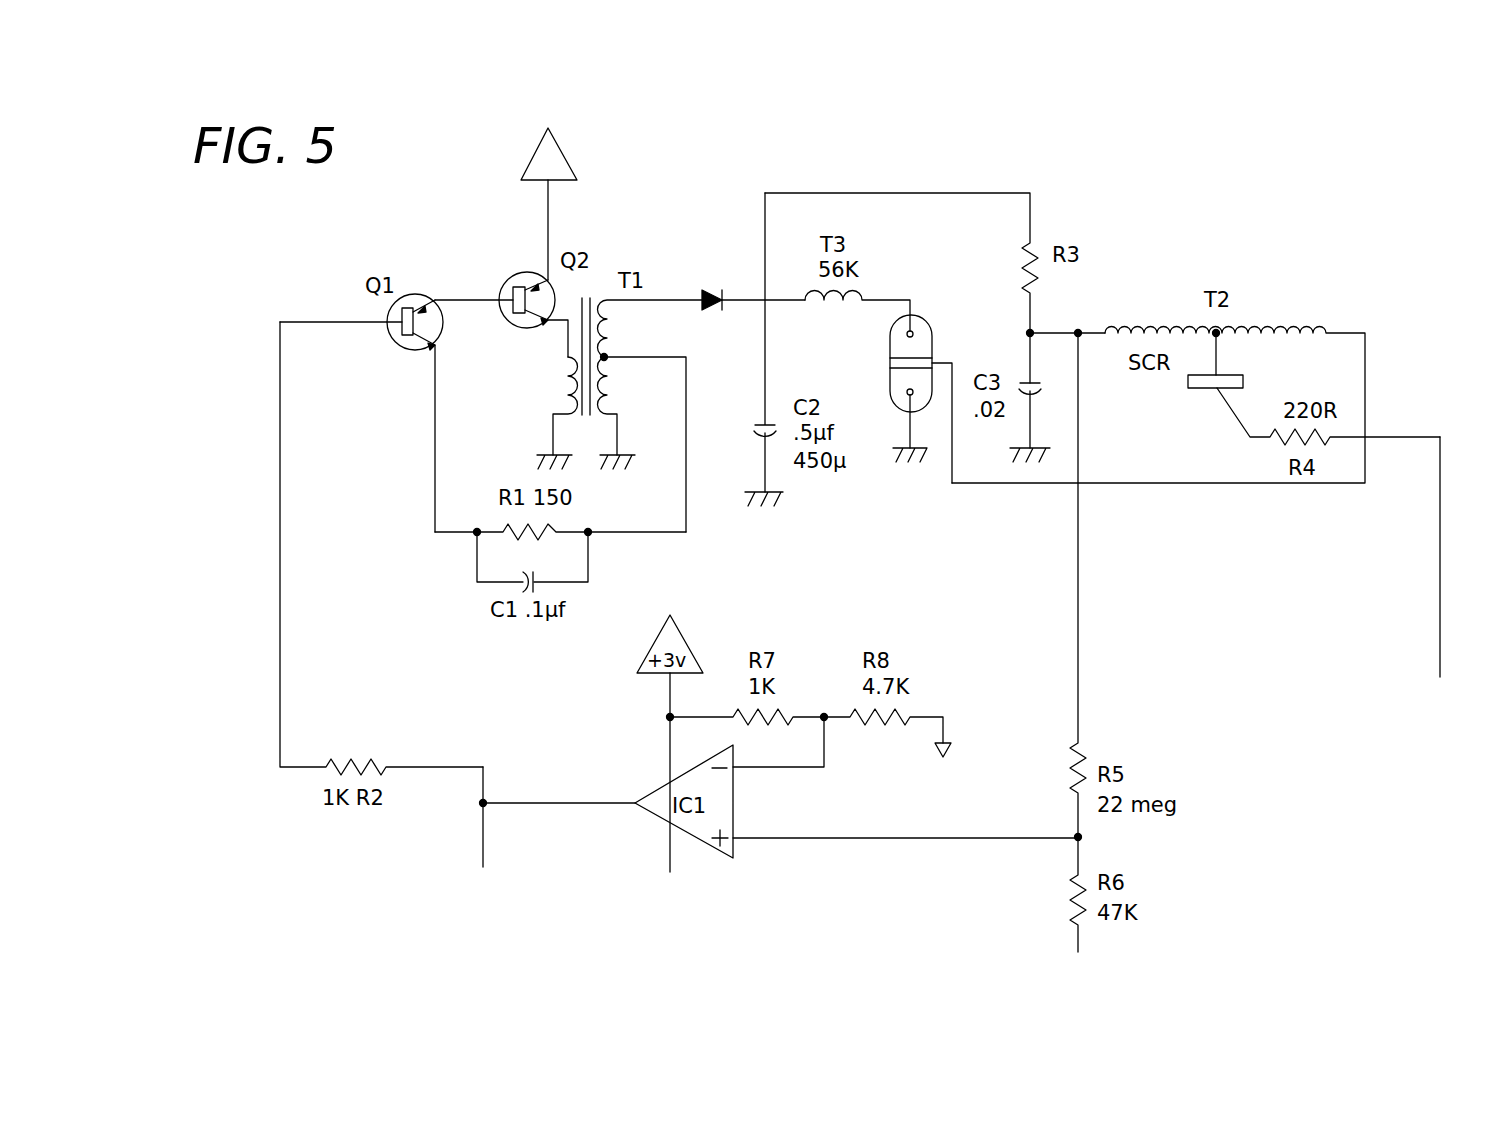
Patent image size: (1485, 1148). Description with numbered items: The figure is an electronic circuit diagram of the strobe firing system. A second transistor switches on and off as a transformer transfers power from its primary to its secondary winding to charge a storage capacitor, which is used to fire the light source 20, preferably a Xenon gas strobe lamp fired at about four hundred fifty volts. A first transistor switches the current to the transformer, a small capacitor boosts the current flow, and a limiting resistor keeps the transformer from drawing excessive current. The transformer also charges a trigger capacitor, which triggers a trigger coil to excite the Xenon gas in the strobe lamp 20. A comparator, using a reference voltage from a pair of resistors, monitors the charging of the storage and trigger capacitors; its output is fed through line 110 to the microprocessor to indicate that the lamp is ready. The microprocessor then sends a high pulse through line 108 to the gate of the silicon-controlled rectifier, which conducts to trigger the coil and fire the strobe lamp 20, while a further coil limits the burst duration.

The light source 20 is at (906, 337).
The line 108 is at (1440, 585).
The line 110 is at (483, 838).